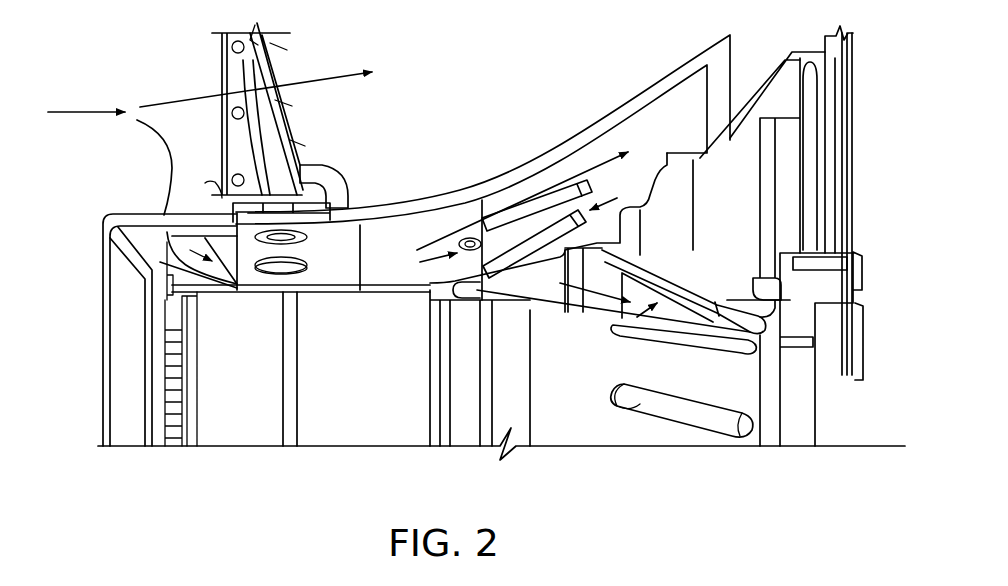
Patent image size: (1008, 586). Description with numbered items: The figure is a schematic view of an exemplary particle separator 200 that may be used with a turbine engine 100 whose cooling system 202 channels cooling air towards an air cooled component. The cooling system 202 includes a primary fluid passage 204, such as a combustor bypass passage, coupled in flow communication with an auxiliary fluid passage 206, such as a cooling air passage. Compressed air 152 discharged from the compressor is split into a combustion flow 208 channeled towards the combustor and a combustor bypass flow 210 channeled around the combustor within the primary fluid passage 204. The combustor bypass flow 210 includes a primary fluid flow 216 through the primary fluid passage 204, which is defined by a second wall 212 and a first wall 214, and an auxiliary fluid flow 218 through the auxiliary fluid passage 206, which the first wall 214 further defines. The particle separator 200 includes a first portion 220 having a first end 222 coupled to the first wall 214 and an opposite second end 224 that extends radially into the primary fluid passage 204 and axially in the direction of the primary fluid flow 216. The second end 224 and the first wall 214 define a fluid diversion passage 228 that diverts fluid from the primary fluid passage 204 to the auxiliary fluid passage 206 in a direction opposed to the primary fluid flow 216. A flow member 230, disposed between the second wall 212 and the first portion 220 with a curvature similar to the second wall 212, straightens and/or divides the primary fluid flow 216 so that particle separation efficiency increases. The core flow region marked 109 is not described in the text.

The turbine engine 100 is at (85, 302).
The core flow path 109 is at (706, 32).
The compressed air 152 is at (100, 105).
The particle separator 200 is at (440, 222).
The cooling system 202 is at (340, 262).
The primary fluid passage 204 is at (392, 255).
The auxiliary fluid passage 206 is at (610, 325).
The combustion flow 208 is at (190, 97).
The combustor bypass flow 210 is at (170, 160).
The second wall 212 is at (633, 103).
The first wall 214 is at (336, 292).
The primary fluid flow 216 is at (567, 180).
The auxiliary fluid flow 218 is at (607, 277).
The first portion 220 is at (467, 217).
The first end 222 is at (460, 300).
The second end 224 is at (547, 197).
The fluid diversion passage 228 is at (607, 195).
The flow member 230 is at (500, 182).